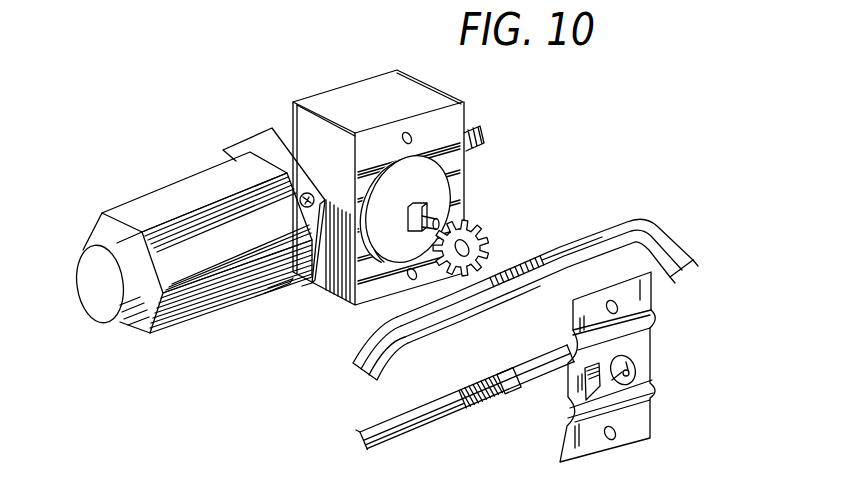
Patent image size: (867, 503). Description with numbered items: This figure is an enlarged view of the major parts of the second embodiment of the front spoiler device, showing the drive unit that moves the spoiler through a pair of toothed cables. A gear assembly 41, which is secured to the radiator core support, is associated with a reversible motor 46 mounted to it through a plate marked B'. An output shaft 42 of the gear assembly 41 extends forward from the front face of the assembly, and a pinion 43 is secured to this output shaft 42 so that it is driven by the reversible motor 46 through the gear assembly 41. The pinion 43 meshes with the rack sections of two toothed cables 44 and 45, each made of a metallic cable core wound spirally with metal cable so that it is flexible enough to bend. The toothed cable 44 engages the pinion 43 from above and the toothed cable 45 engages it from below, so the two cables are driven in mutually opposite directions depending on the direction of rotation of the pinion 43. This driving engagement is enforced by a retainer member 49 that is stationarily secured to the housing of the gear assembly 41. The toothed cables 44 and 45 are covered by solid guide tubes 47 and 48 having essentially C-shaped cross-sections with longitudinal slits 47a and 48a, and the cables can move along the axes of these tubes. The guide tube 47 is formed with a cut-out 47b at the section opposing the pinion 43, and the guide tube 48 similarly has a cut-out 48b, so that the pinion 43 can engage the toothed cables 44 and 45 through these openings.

The gear assembly 41 is at (374, 93).
The output shaft 42 is at (448, 213).
The pinion 43 is at (480, 241).
The toothed cable 44 is at (508, 296).
The toothed cable 45 is at (475, 383).
The reversible motor 46 is at (211, 220).
The guide tube 47 is at (499, 277).
The longitudinal slit 47a is at (378, 334).
The cut-out 47b is at (495, 300).
The guide tube 48 is at (465, 418).
The longitudinal slit 48a is at (403, 438).
The cut-out 48b is at (459, 395).
The retainer member 49 is at (650, 425).
The mounting plate B' is at (274, 163).